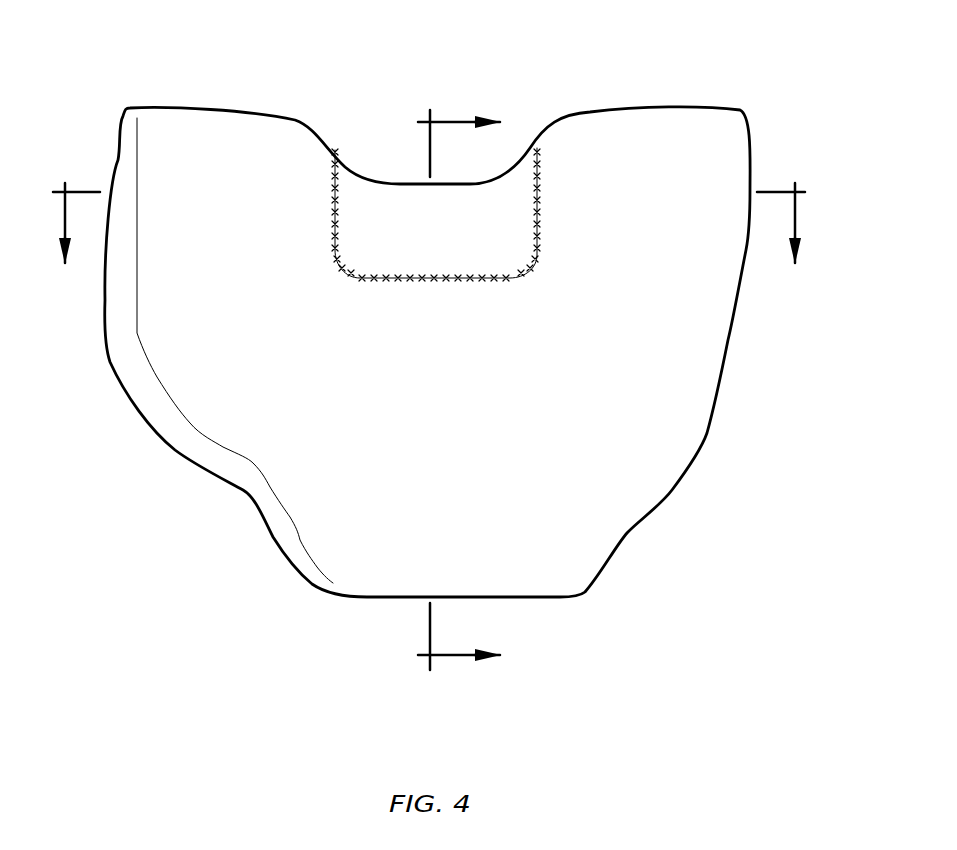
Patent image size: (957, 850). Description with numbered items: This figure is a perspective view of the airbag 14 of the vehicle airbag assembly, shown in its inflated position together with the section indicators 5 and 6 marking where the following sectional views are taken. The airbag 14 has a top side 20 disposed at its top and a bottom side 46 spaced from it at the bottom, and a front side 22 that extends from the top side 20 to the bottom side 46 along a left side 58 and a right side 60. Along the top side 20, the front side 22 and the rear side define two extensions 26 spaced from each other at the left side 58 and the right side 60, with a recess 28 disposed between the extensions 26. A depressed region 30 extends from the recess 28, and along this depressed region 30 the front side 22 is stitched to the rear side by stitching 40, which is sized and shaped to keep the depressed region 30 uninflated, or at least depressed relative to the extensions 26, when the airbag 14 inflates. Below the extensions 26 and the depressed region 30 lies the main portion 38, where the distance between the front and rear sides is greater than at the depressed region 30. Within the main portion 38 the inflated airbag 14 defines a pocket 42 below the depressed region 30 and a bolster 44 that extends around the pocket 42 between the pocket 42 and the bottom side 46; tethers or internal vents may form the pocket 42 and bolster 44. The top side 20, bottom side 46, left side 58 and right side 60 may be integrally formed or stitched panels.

The airbag 14 is at (160, 578).
The top side 20 is at (538, 75).
The front side 22 is at (618, 310).
The extensions 26 is at (222, 100).
The recess 28 is at (400, 178).
The depressed region 30 is at (391, 237).
The main portion 38 is at (372, 532).
The stitching 40 is at (337, 190).
The pocket 42 is at (414, 322).
The bolster 44 is at (168, 307).
The bottom side 46 is at (367, 607).
The left side 58 is at (110, 398).
The right side 60 is at (733, 362).
The section line 5- 5 is at (429, 211).
The section line 6- 6 is at (459, 393).